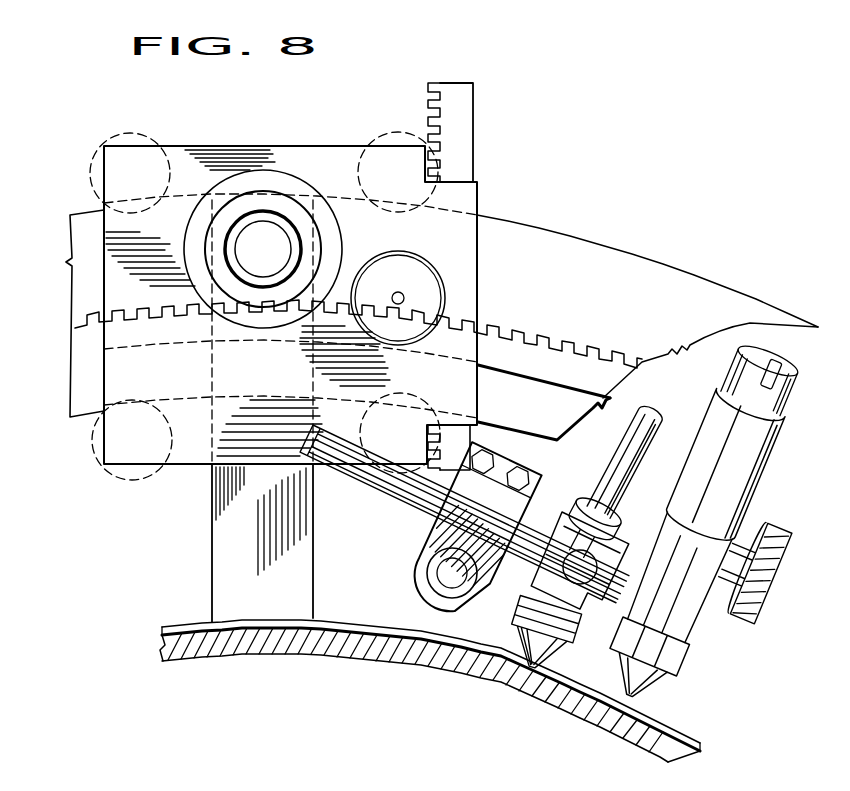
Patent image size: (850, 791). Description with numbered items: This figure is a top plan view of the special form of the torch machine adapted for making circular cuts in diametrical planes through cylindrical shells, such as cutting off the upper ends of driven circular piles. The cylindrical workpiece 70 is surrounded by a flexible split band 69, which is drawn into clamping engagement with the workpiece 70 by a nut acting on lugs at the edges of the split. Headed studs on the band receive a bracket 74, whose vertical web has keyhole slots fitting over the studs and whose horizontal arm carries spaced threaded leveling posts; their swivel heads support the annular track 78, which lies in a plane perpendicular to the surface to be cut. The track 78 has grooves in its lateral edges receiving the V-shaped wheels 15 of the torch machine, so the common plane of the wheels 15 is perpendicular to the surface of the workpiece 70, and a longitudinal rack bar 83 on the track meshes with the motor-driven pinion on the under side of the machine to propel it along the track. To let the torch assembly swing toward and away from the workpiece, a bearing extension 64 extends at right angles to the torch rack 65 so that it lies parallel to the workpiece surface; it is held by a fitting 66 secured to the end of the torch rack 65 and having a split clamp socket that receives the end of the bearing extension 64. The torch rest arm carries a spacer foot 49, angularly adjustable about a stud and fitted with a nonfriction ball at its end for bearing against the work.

The wheels 15 is at (126, 133).
The torch rack 65 is at (467, 138).
The track 78 is at (630, 255).
The rack bar 83 is at (537, 365).
The bracket 74 is at (305, 547).
The fitting 66 is at (447, 478).
The bearing extension 64 is at (453, 582).
The flexible split band 69 is at (366, 627).
The cylindrical workpiece 70 is at (377, 655).
The spacer foot 49 is at (558, 663).